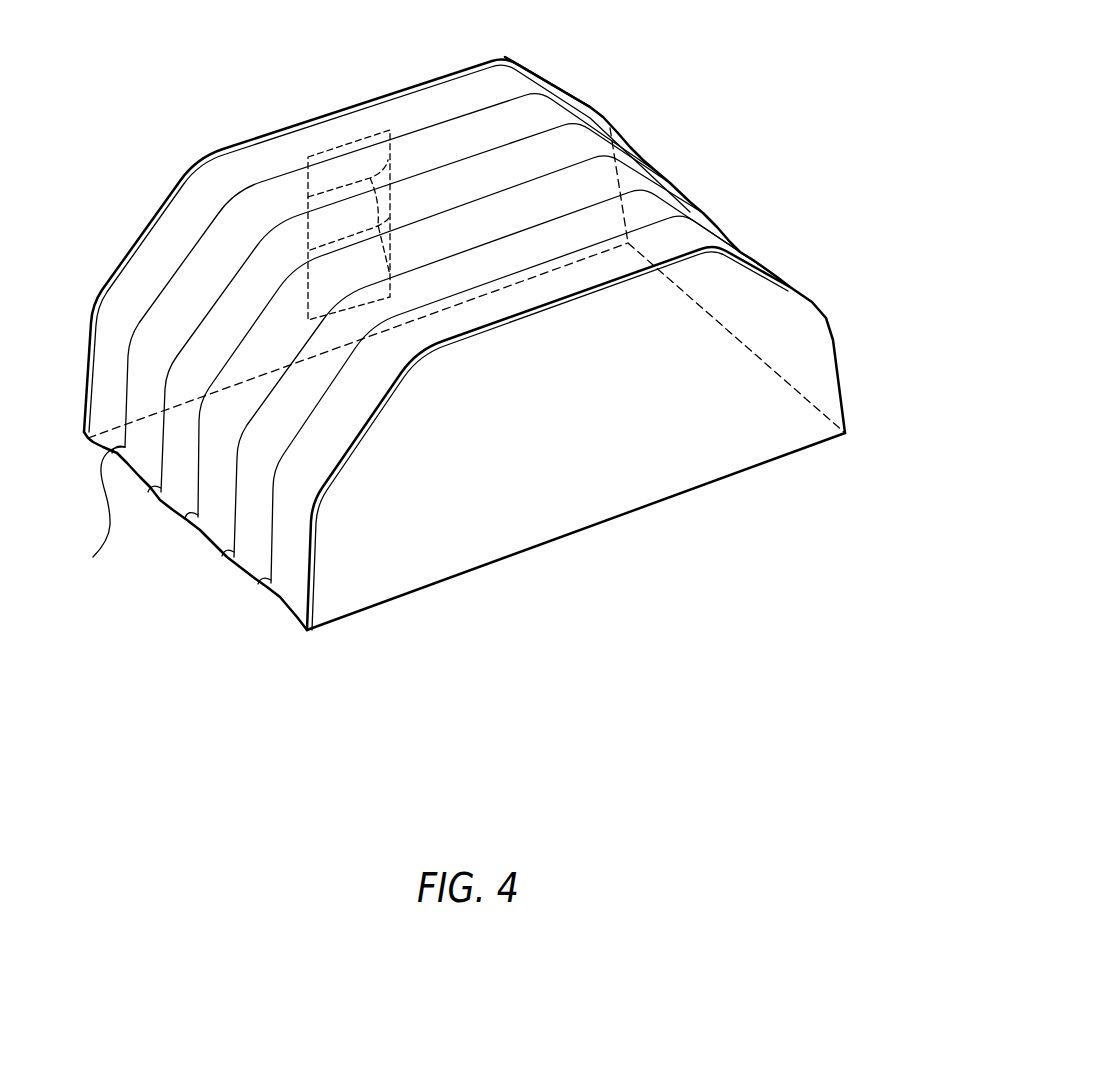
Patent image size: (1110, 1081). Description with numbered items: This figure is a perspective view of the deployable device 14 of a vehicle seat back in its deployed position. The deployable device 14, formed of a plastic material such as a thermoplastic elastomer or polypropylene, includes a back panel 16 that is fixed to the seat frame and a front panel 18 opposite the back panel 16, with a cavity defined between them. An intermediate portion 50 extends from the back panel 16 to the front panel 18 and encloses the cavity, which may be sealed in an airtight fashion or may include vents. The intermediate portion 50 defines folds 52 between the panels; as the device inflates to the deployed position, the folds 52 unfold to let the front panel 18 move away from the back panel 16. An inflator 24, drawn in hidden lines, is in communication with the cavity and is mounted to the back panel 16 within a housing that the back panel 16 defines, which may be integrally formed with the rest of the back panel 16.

The deployable device 14 is at (687, 113).
The back panel 16 is at (281, 131).
The front panel 18 is at (600, 483).
The inflator 24 is at (392, 290).
The intermediate portion 50 is at (696, 207).
The folds 52 is at (262, 568).